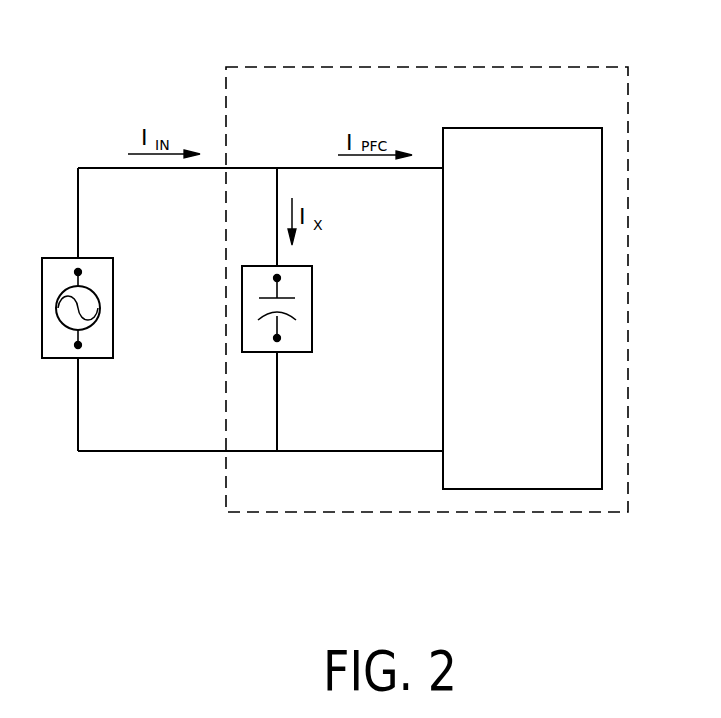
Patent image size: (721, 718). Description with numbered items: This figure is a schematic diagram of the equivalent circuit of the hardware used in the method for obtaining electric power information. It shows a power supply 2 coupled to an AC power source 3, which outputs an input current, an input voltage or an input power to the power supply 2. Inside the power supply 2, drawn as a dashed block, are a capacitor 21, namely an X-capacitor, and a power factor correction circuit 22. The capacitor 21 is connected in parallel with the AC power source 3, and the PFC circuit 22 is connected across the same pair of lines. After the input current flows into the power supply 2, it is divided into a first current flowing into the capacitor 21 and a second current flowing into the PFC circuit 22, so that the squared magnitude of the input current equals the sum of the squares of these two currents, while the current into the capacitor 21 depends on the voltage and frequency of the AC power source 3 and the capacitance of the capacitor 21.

The power supply 2 is at (298, 67).
The AC power source 3 is at (59, 258).
The capacitor 21 is at (312, 295).
The power factor correction circuit 22 is at (520, 128).